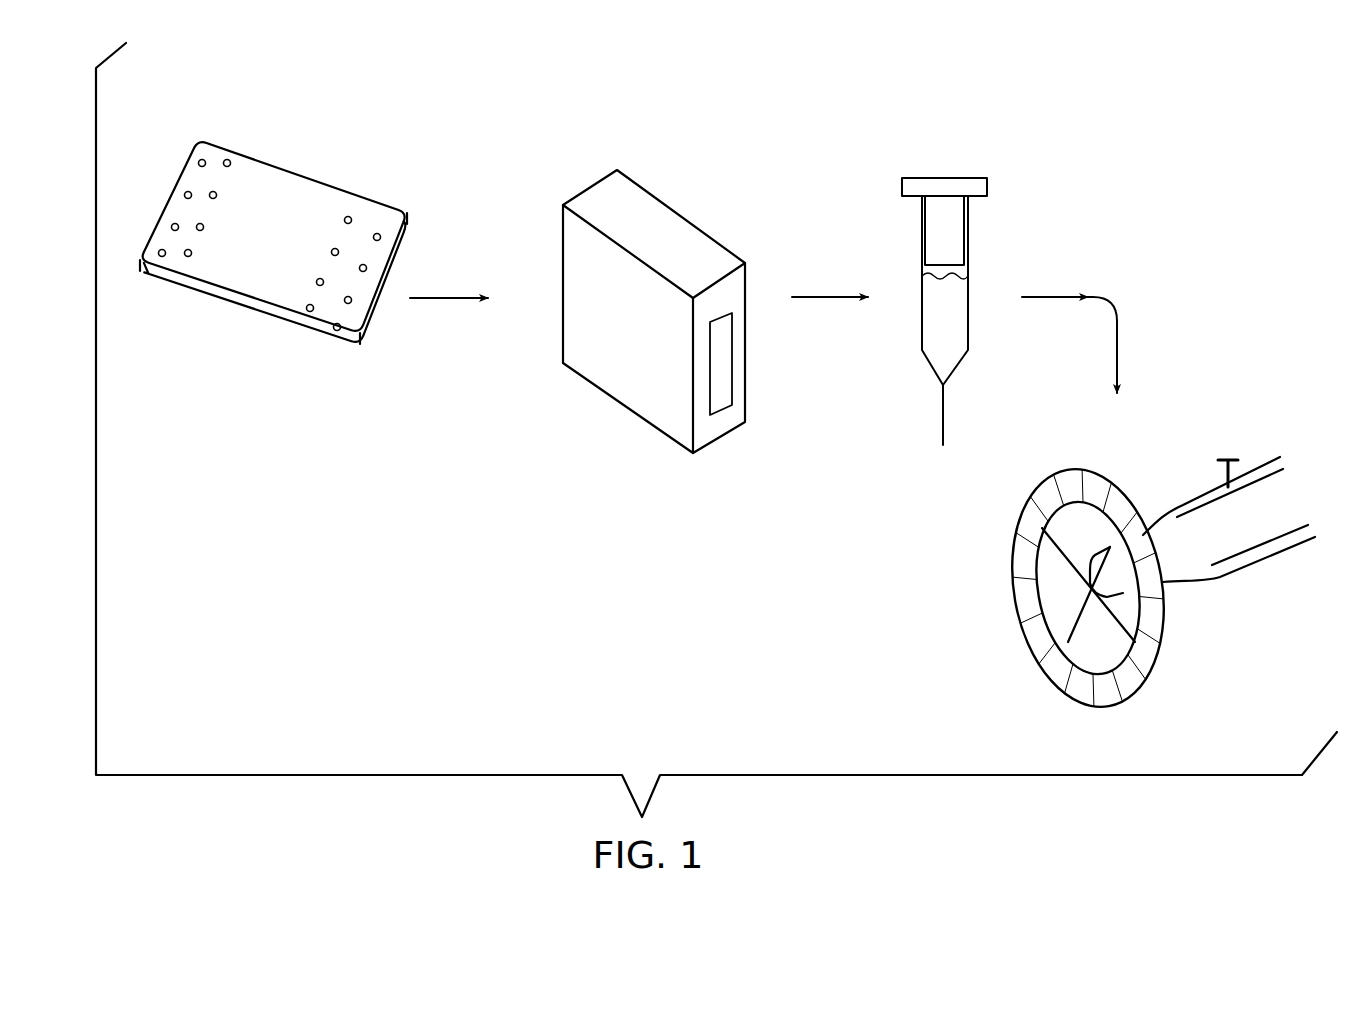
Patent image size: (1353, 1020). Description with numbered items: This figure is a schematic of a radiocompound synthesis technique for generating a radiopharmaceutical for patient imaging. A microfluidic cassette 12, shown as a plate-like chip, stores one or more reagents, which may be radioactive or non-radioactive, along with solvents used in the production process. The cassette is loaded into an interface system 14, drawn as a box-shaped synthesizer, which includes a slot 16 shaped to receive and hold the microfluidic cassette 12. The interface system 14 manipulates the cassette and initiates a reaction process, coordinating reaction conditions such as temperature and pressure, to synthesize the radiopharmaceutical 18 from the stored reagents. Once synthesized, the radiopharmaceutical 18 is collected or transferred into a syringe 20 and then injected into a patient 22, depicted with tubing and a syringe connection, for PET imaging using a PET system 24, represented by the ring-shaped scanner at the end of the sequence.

The microfluidic cassette 12 is at (316, 165).
The interface system 14 is at (693, 288).
The slot 16 is at (732, 377).
The radiopharmaceutical 18 is at (959, 329).
The syringe 20 is at (1075, 302).
The patient 22 is at (1245, 568).
The PET system 24 is at (1117, 486).